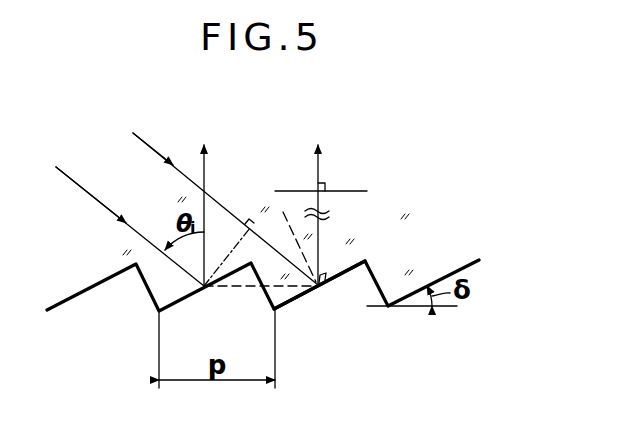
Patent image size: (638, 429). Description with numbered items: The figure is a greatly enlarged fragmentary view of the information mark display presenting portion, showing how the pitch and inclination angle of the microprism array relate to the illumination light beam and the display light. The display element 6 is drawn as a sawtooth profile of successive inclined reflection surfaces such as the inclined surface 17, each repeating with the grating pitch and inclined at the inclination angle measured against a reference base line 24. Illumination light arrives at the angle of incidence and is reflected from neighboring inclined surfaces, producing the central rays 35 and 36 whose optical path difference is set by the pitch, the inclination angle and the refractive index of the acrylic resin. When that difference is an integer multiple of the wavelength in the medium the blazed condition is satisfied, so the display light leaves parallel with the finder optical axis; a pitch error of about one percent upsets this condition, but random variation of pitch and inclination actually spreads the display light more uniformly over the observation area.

The transparent sheet with sawtooth surface 6 is at (468, 188).
The inclined sawtooth face 17 is at (309, 310).
The reference base line 24 is at (418, 309).
The central ray 35 is at (204, 170).
The central ray 36 is at (318, 170).